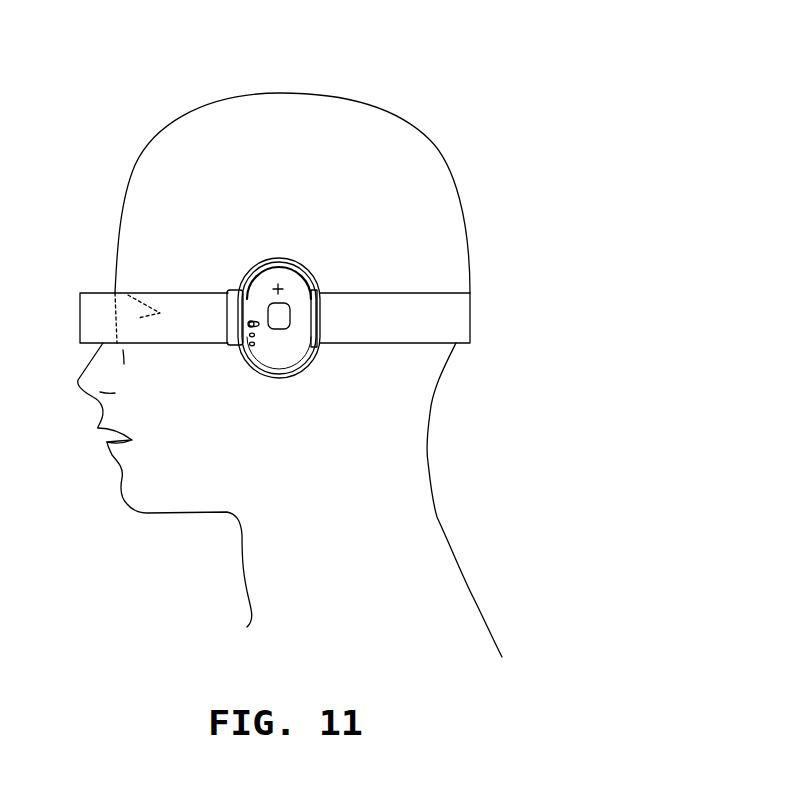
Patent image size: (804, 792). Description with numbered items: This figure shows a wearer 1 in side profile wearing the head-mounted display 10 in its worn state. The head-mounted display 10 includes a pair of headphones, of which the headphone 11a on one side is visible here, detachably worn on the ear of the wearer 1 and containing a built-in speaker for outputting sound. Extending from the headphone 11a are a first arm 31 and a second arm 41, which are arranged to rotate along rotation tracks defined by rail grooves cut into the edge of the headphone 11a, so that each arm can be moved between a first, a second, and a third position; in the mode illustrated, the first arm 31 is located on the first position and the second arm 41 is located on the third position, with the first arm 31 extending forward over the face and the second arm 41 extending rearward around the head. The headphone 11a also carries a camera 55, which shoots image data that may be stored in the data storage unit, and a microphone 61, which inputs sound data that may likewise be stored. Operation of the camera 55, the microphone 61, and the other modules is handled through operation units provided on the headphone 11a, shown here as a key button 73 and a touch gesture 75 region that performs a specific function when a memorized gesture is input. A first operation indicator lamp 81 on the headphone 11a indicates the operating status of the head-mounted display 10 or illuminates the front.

The wearer 1 is at (410, 140).
The head-mounted display 10 is at (290, 300).
The headphone 11a is at (248, 300).
The first arm 31 is at (87, 294).
The second arm 41 is at (472, 308).
The camera 55 is at (247, 327).
The microphone 61 is at (252, 347).
The key button 73 is at (278, 330).
The touch gesture 75 is at (283, 287).
The first operation indicator lamp 81 is at (241, 346).